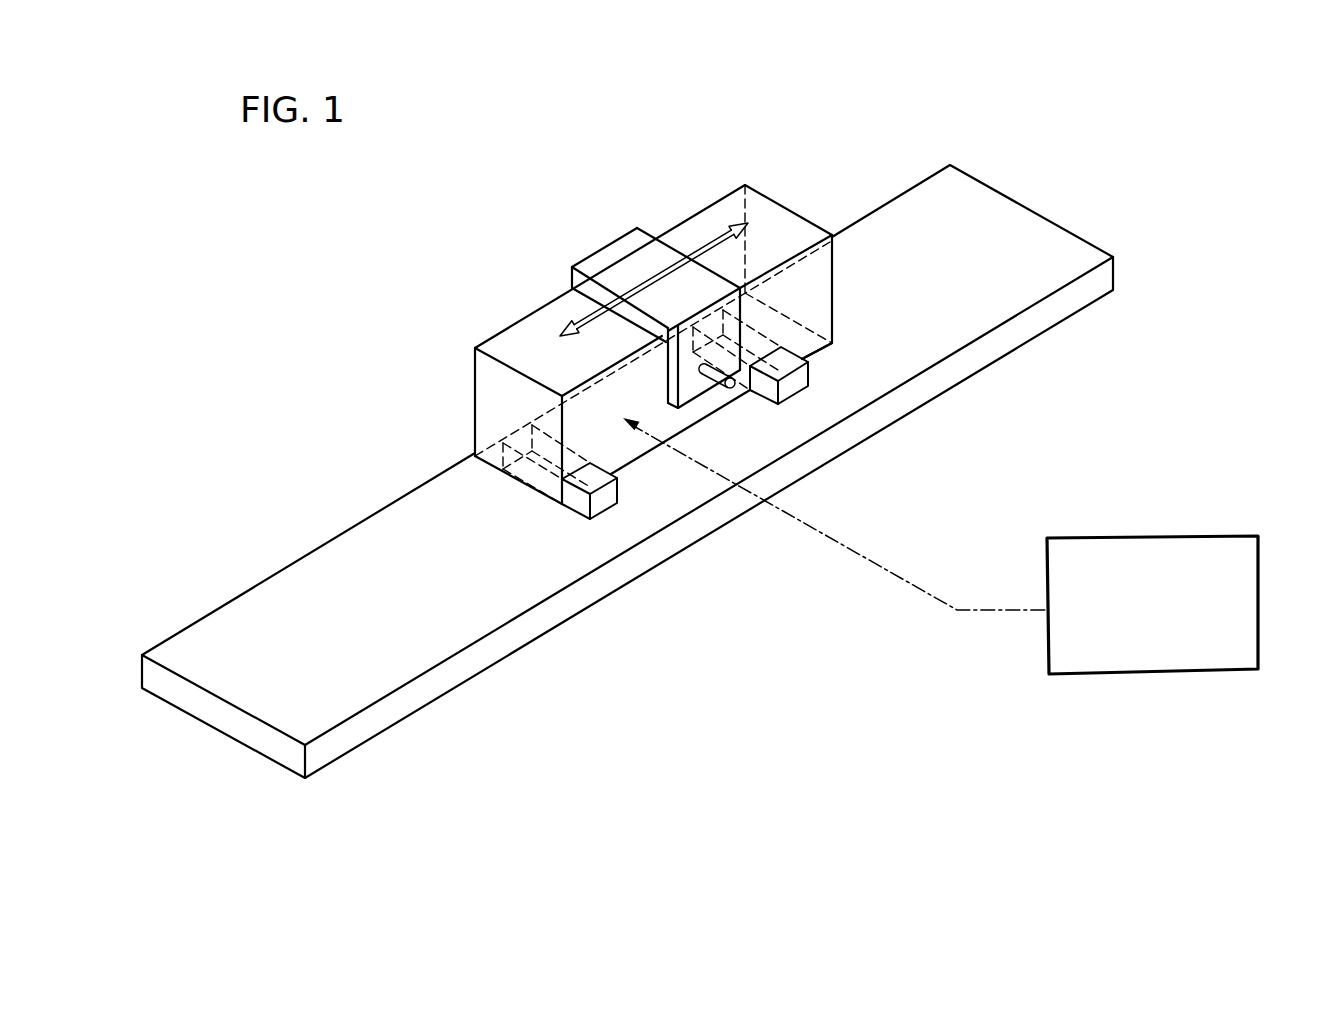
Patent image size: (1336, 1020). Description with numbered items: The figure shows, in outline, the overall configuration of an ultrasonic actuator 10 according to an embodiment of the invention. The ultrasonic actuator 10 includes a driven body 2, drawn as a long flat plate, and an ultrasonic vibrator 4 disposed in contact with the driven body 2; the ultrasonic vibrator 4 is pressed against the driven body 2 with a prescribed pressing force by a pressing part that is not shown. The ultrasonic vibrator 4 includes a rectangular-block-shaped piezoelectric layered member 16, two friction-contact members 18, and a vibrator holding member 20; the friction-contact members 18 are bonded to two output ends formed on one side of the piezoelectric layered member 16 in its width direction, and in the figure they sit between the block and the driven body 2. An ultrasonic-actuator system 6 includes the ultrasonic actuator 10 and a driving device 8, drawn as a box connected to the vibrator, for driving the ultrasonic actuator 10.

The driven body 2 is at (322, 755).
The ultrasonic vibrator 4 is at (516, 250).
The ultrasonic-actuator system 6 is at (850, 778).
The driving device 8 is at (1147, 676).
The ultrasonic actuator 10 is at (1012, 146).
The piezoelectric layered member 16 is at (832, 280).
The friction-contact members 18 is at (808, 367).
The vibrator holding member 20 is at (602, 230).